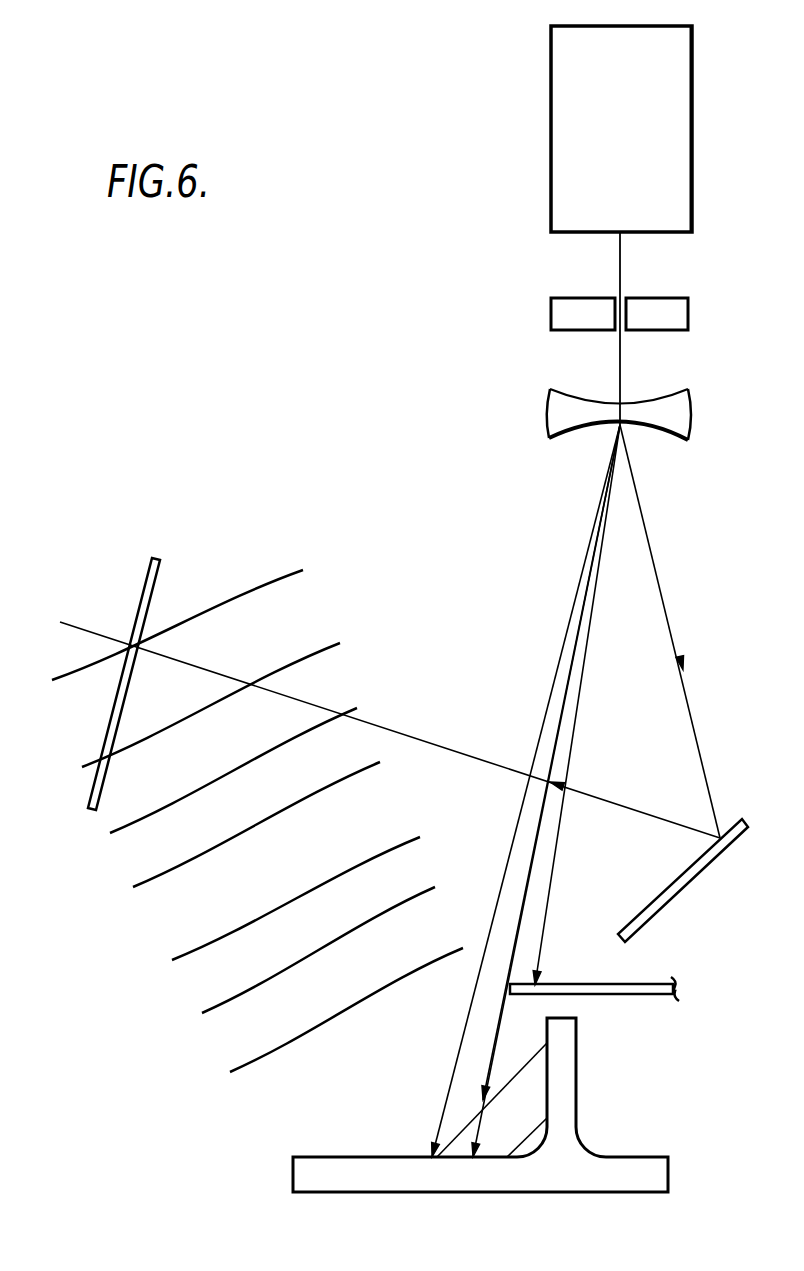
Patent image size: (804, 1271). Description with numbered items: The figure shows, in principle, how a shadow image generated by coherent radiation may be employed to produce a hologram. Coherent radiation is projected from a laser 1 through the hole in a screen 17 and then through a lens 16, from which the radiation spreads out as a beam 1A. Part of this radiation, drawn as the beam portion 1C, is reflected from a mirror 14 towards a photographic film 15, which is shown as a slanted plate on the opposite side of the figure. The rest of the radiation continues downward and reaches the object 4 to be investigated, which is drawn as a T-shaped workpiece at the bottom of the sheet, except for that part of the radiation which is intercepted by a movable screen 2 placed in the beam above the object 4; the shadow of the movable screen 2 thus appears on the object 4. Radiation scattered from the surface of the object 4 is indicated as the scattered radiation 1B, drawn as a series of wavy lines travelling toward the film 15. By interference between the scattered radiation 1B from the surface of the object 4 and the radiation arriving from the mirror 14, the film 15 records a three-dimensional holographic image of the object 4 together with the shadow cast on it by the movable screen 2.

The laser 1 is at (557, 85).
The screen 17 is at (551, 310).
The lens 16 is at (556, 416).
The laser beam 1A is at (585, 568).
The reflected beam portion 1C is at (703, 783).
The photographic film 15 is at (152, 573).
The scattered radiation 1B is at (294, 875).
The mirror 14 is at (660, 905).
The movable screen 2 is at (640, 990).
The object 4 is at (330, 1125).